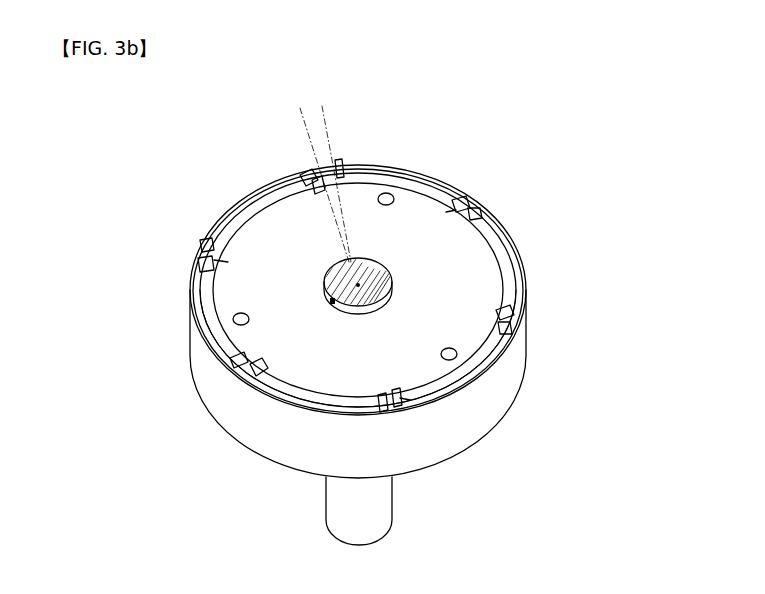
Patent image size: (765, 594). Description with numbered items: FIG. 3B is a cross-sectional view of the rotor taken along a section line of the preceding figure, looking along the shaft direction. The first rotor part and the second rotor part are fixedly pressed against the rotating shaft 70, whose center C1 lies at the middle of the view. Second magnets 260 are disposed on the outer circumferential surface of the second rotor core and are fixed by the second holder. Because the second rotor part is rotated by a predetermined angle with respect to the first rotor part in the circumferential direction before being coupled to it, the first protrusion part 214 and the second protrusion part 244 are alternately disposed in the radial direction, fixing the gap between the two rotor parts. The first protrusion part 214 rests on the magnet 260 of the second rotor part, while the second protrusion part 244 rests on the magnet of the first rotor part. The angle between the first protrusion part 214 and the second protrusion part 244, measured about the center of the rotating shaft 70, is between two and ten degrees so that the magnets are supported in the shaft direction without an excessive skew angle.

The second protrusion part 244 is at (306, 177).
The first protrusion part 214 is at (343, 165).
The second magnet 260 is at (408, 178).
The rotating shaft 70 is at (327, 290).
The center C1 is at (358, 285).